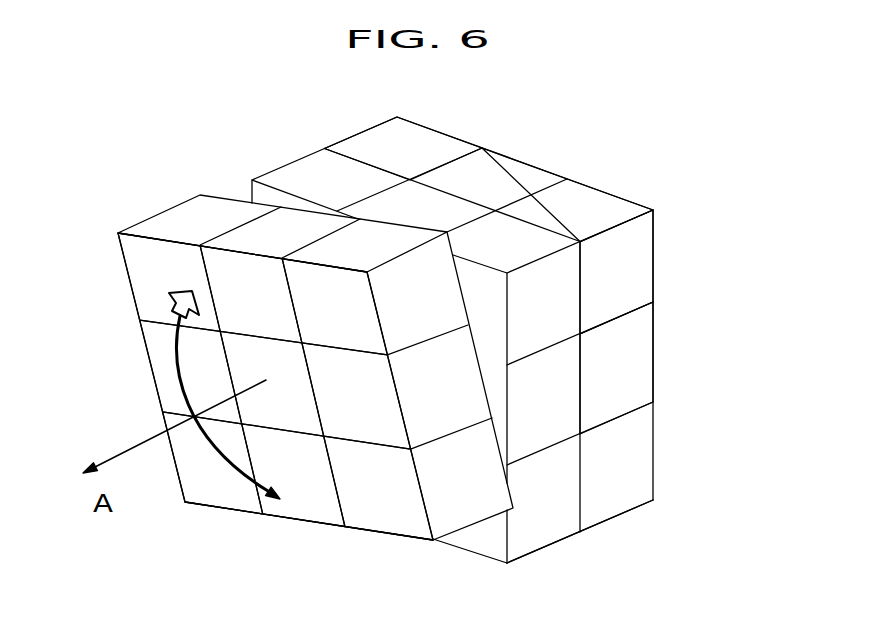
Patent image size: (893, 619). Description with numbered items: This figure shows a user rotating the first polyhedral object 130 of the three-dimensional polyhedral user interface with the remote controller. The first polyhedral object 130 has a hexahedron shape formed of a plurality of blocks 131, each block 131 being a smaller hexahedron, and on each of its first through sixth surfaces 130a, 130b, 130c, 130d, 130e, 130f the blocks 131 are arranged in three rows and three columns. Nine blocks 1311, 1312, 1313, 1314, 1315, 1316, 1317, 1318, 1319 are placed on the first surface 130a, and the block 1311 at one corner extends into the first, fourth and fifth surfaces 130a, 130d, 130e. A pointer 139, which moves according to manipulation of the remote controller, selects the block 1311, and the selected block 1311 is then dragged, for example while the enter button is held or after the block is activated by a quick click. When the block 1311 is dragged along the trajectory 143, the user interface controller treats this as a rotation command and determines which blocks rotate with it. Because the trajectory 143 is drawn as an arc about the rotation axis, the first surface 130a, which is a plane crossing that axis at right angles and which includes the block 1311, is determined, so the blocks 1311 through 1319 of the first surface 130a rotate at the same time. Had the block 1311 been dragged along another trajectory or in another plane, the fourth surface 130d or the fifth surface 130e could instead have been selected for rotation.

The first polyhedral object 130 is at (604, 170).
The first surface 130a is at (317, 507).
The second surface 130b is at (613, 365).
The third surface 130c is at (655, 257).
The fourth surface 130d is at (270, 170).
The fifth surface 130e is at (615, 210).
The sixth surface 130f is at (538, 552).
The blocks 131 is at (133, 214).
The selected block 1311 is at (192, 284).
The block 1312 is at (217, 376).
The block 1313 is at (240, 470).
The block 1314 is at (274, 304).
The block 1315 is at (299, 414).
The block 1316 is at (322, 490).
The block 1317 is at (364, 322).
The block 1318 is at (380, 406).
The block 1319 is at (405, 500).
The pointer 139 is at (172, 303).
The trajectory 143 is at (177, 394).